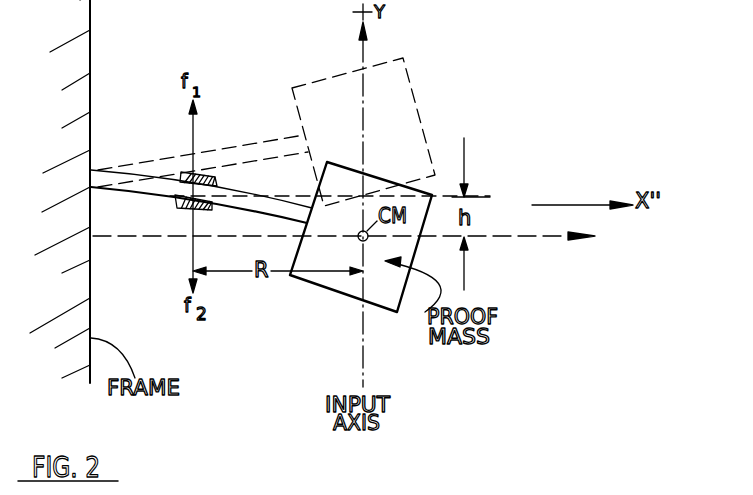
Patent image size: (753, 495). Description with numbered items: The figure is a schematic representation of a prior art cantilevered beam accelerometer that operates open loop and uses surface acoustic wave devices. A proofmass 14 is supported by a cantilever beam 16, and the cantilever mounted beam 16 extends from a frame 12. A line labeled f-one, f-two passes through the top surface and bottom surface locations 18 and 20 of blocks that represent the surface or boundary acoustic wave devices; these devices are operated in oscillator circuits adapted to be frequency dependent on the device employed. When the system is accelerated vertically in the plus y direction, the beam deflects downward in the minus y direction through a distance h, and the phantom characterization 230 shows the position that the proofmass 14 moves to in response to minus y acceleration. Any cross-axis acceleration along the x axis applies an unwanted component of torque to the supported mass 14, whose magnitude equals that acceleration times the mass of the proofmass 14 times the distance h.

The frame 12 is at (91, 97).
The proofmass 14 is at (395, 296).
The cantilever beam 16 is at (242, 192).
The top surface location of SAW device 18 is at (190, 171).
The bottom surface location of SAW device 20 is at (190, 206).
The phantom characterization 230 is at (392, 110).